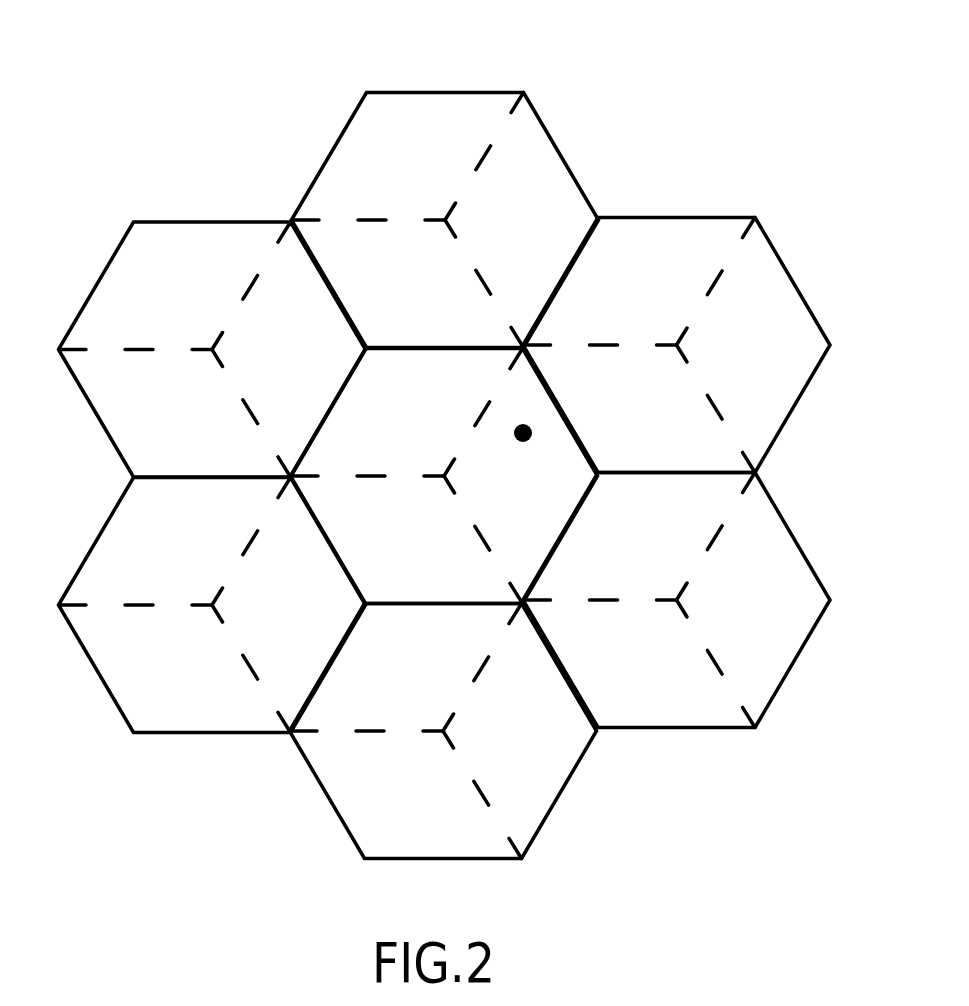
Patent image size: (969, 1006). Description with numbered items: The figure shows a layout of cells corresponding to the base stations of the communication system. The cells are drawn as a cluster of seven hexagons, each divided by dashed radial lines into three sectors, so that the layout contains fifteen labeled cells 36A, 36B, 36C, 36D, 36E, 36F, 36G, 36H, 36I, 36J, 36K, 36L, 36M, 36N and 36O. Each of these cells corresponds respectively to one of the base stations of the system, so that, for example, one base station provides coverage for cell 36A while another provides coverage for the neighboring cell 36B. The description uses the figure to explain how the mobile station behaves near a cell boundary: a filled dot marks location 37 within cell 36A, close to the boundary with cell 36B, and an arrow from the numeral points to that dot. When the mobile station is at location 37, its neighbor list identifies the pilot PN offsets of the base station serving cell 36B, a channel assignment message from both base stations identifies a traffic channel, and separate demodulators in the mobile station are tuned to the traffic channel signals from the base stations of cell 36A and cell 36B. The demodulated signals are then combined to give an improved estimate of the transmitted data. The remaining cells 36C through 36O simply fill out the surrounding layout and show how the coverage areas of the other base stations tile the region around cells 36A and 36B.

The cell 36A is at (521, 476).
The cell 36B is at (639, 409).
The cell 36C is at (639, 537).
The cell 36D is at (639, 664).
The cell 36E is at (520, 731).
The cell 36F is at (406, 668).
The cell 36G is at (407, 540).
The cell 36H is at (407, 413).
The cell 36I is at (408, 284).
The cell 36J is at (522, 219).
The cell 36K is at (639, 282).
The cell 36L is at (754, 345).
The cell 36M is at (754, 600).
The cell 36N is at (406, 795).
The cell 36O is at (408, 157).
The location 37 is at (525, 423).